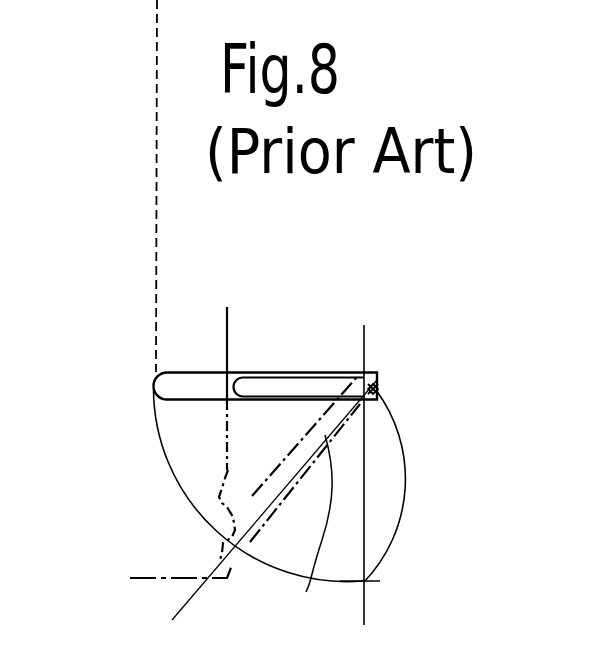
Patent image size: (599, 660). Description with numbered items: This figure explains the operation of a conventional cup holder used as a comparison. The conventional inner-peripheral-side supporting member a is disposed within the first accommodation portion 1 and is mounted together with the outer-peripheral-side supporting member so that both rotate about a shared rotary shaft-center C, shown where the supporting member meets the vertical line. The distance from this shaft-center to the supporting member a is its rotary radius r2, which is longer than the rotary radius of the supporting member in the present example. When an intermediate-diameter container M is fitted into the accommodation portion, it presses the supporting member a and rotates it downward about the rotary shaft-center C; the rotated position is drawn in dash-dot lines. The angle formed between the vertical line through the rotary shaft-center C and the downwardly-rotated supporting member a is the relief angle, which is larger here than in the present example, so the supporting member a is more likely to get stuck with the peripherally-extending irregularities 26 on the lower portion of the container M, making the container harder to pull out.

The inner-peripheral-side supporting member a is at (184, 372).
The intermediate-diameter container M is at (227, 327).
The rotary shaft-center C is at (378, 383).
The first accommodation portion 1 is at (125, 482).
The rotary radius r2 is at (393, 486).
The peripherally-extending irregularities 26 is at (247, 560).